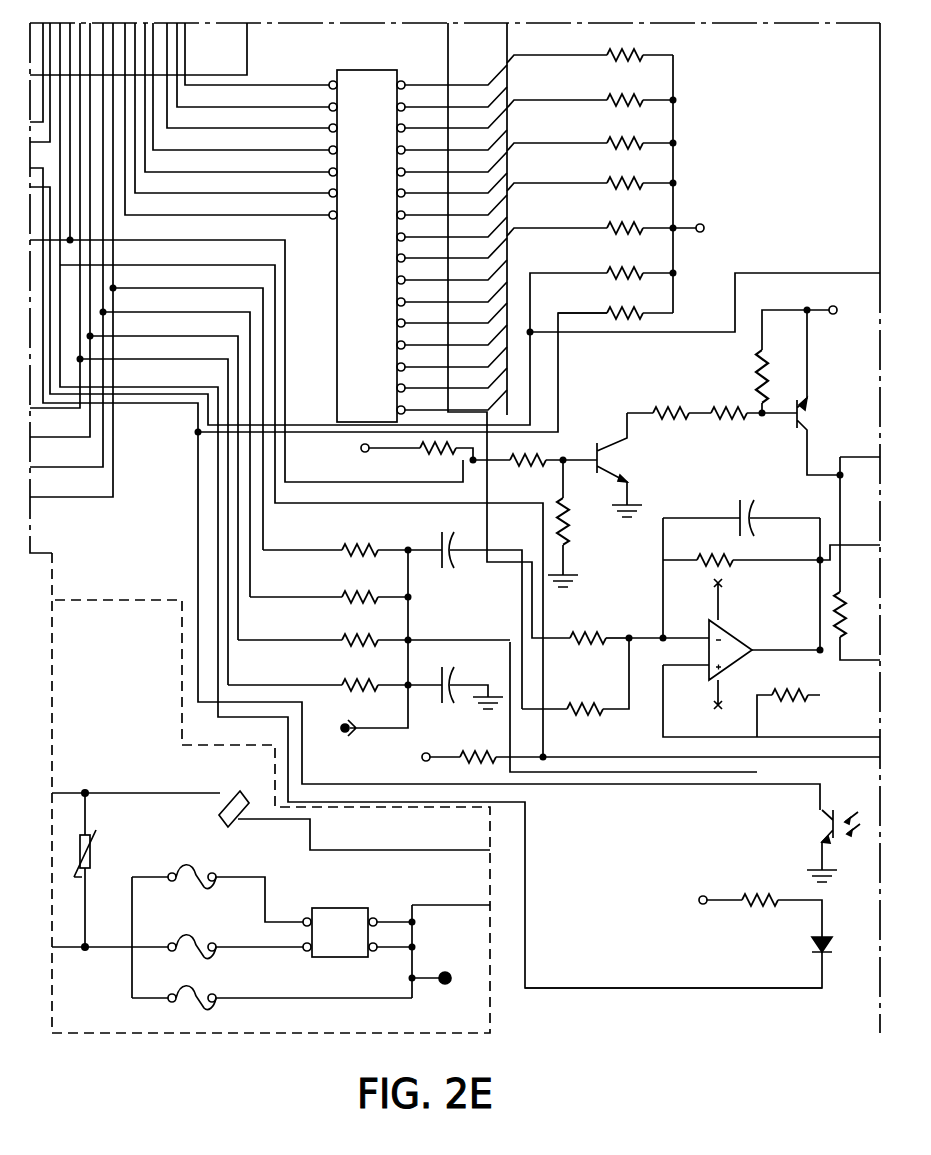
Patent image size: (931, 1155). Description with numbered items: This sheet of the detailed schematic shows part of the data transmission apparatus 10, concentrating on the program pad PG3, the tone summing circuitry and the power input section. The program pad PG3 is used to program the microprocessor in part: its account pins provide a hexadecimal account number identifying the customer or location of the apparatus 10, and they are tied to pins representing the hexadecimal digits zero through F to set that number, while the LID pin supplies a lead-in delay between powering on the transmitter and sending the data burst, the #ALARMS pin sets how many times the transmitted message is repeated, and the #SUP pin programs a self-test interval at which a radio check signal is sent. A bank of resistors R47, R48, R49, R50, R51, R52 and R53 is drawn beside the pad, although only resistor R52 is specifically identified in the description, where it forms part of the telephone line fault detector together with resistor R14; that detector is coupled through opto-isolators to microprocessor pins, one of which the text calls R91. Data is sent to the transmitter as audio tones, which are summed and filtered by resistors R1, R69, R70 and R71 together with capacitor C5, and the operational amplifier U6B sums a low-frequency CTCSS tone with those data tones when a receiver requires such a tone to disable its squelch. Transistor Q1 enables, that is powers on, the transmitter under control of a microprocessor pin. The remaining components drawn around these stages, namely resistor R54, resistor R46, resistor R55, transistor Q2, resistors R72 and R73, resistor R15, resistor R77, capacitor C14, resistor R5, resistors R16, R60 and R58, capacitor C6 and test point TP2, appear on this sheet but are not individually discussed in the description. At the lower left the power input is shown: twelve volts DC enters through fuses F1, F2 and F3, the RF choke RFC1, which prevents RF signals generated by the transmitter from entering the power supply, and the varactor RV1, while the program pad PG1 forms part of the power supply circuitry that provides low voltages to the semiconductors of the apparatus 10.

The data transmission apparatus 10 is at (617, 1050).
The pull-up resistor 68K R47 is at (615, 46).
The pull-up resistor 68K R48 is at (615, 91).
The pull-up resistor 68K R49 is at (615, 134).
The pull-up resistor 68K R50 is at (615, 174).
The pull-up resistor 68K R51 is at (615, 219).
The resistor R52 is at (615, 264).
The pull-up resistor 68K R53 is at (615, 304).
The program pad PG3 is at (346, 237).
The resistor 33K R54 is at (417, 457).
The resistor 1K R46 is at (535, 459).
The resistor 220K R55 is at (576, 523).
The transistor MPS-A14 Q2 is at (644, 465).
The resistor 180 1/4W R72 is at (669, 379).
The resistor 180 1/4W R73 is at (753, 379).
The resistor 10K R15 is at (792, 361).
The transistor Q1 is at (833, 392).
The resistor 1K R77 is at (857, 623).
The operational amplifier U6B is at (735, 644).
The capacitor 100pf C14 is at (741, 492).
The resistor 220K R5 is at (741, 553).
The microprocessor pin R91 is at (788, 706).
The resistor 100K R16 is at (598, 638).
The resistor 100K R60 is at (575, 688).
The resistor 33K R58 is at (651, 757).
The resistor R1 is at (335, 542).
The resistor R70 is at (329, 589).
The resistor R71 is at (374, 632).
The resistor R69 is at (318, 677).
The capacitor .1uf C6 is at (465, 612).
The capacitor C5 is at (455, 690).
The test point TP2 is at (374, 657).
The resistor R14 is at (760, 907).
The RF choke RFC1 is at (335, 799).
The varactor RV1 is at (135, 870).
The fuse F1 is at (217, 889).
The fuse F2 is at (217, 950).
The fuse F3 is at (272, 1000).
The program pad PG1 is at (357, 933).